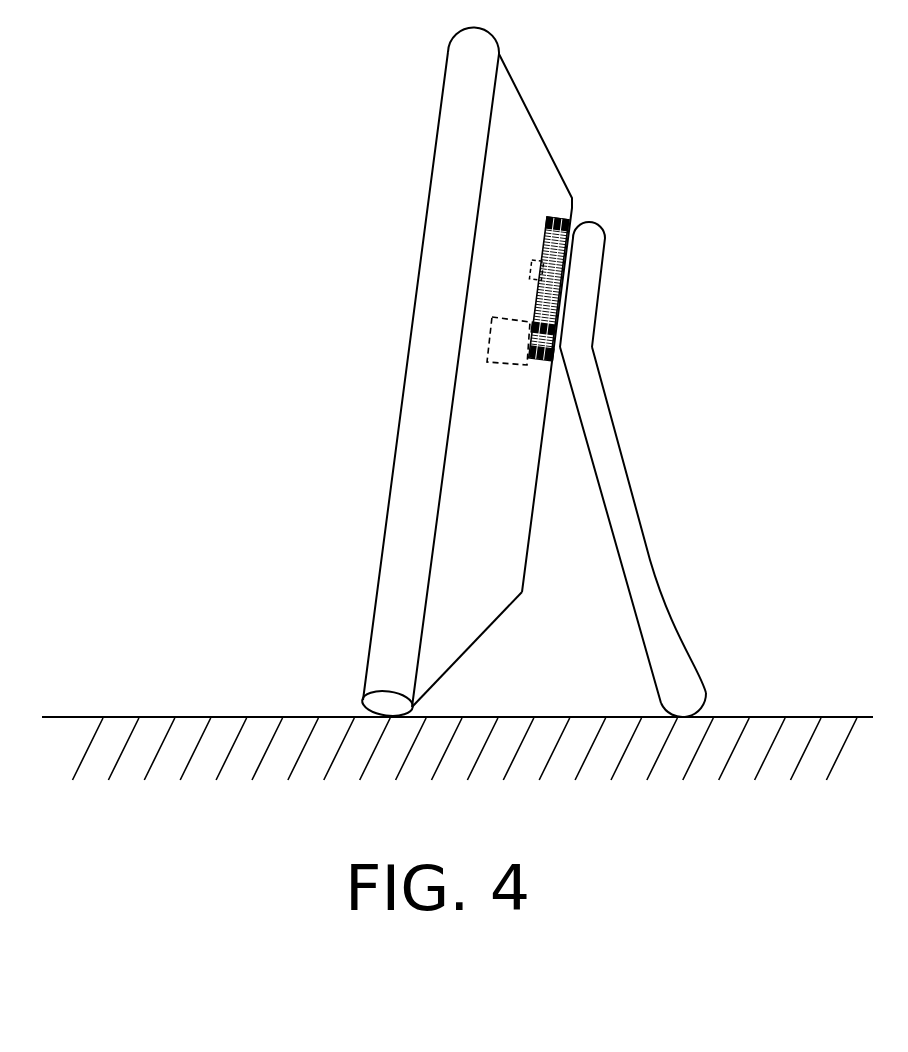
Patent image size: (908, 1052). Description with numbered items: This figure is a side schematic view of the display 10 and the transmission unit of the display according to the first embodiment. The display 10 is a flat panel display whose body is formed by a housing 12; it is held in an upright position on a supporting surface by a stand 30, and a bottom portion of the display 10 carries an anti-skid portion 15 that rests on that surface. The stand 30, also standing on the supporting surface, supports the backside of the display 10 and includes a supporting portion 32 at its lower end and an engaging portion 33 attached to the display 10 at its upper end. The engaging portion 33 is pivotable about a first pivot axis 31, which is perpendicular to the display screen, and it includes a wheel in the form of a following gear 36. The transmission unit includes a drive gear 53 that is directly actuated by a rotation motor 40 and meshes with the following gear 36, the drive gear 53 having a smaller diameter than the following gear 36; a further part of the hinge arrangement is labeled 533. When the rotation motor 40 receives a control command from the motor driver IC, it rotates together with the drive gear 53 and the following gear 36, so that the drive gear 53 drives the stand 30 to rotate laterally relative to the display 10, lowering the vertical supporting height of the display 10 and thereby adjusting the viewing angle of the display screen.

The display 10 is at (448, 372).
The housing 12 is at (457, 615).
The anti-skid portion 15 is at (380, 703).
The stand 30 is at (692, 469).
The first pivot axis 31 is at (537, 267).
The supporting portion 32 is at (674, 692).
The engaging portion 33 is at (582, 290).
The following gear 36 is at (526, 271).
The rotation motor 40 is at (498, 343).
The drive gear 53 is at (547, 358).
The hinge shaft portion 533 is at (557, 347).